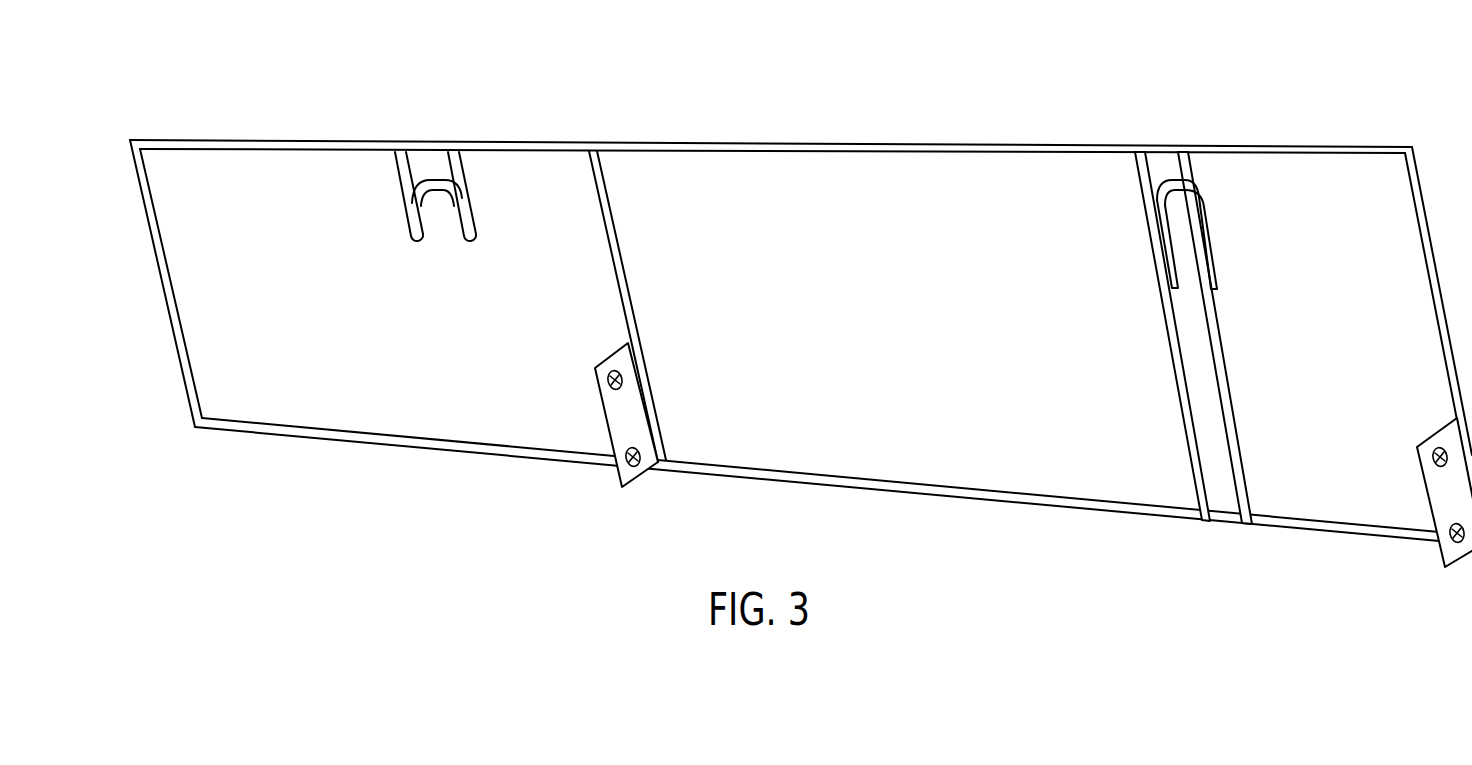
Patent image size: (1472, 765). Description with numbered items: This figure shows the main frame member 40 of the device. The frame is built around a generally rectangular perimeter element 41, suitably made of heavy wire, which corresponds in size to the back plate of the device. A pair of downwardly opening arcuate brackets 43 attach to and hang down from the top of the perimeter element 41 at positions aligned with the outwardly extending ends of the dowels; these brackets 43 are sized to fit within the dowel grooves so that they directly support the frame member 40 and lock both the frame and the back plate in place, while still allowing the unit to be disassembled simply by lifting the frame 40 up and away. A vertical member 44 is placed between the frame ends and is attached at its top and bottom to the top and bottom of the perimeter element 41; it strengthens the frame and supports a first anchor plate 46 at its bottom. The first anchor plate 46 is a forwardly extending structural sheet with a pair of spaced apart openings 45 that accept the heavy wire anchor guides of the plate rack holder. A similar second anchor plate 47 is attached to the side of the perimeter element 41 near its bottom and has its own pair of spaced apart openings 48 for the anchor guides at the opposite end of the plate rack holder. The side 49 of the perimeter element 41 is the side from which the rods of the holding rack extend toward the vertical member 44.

The main frame member 40 is at (801, 296).
The perimeter element 41 is at (270, 140).
The arcuate brackets 43 is at (433, 180).
The vertical member 44 is at (626, 283).
The openings 45 is at (608, 381).
The first anchor plate 46 is at (617, 415).
The second anchor plate 47 is at (1428, 463).
The openings 48 is at (1455, 523).
The side 49 is at (213, 347).